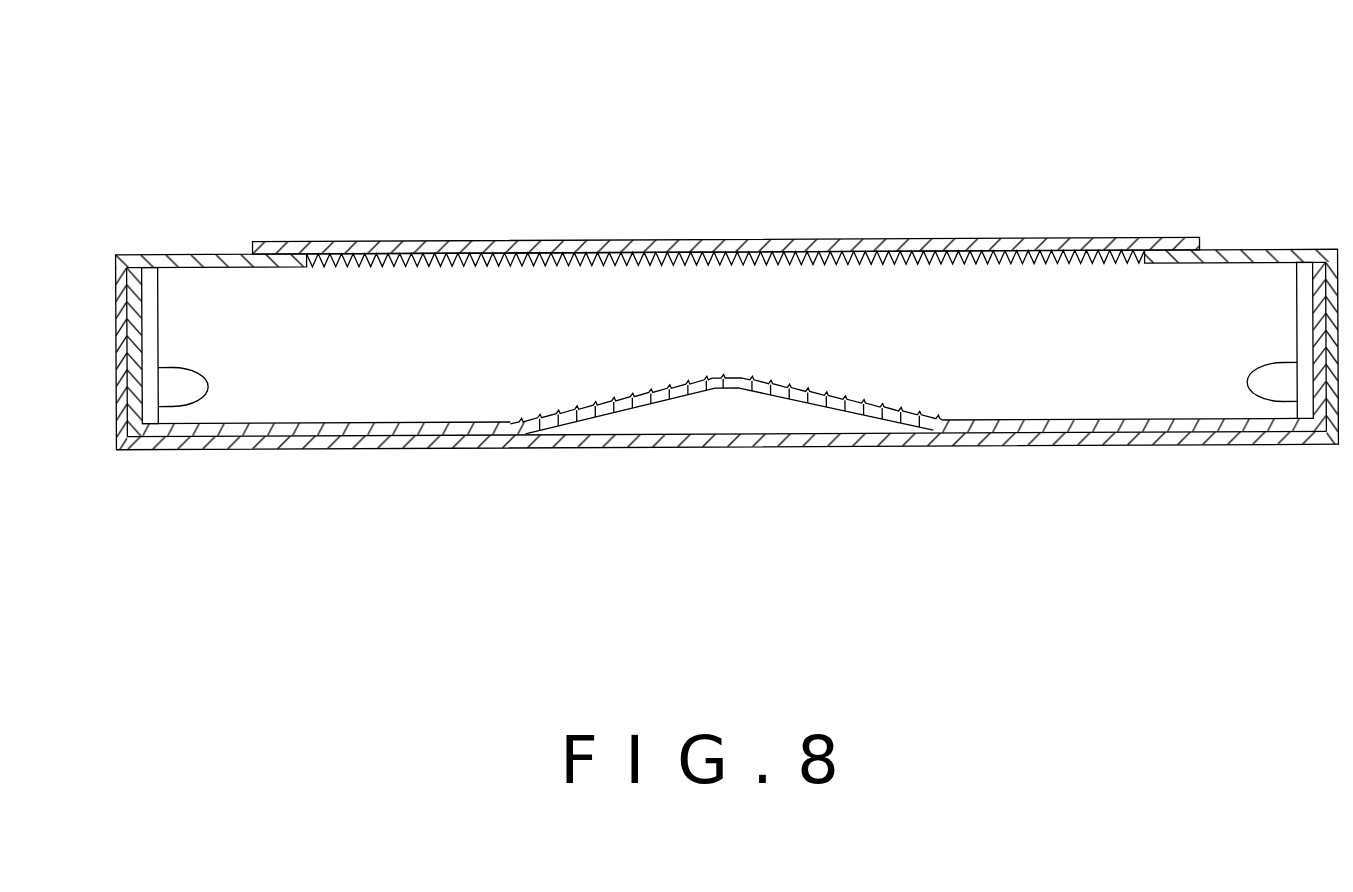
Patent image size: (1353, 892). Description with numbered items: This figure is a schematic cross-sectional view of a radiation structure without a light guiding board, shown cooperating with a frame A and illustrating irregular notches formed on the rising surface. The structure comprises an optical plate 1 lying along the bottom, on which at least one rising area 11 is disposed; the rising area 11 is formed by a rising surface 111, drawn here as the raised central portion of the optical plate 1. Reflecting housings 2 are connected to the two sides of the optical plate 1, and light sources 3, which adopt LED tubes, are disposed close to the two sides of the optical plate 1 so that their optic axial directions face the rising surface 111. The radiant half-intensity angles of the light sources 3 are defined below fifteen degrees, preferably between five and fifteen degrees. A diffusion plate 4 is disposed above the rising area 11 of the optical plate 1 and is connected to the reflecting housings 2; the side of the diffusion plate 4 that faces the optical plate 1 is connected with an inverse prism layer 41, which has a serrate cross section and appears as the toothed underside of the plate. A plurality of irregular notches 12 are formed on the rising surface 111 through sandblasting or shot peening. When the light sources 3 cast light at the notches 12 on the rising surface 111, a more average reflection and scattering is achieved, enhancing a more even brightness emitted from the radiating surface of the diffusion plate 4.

The frame A is at (122, 410).
The optical plate 1 is at (415, 428).
The rising area 11 is at (648, 405).
The irregular notches 12 is at (661, 385).
The rising surface 111 is at (819, 395).
The reflecting housing 2 is at (223, 258).
The light source 3 is at (178, 375).
The diffusion plate 4 is at (584, 245).
The inverse prism layer 41 is at (1023, 242).